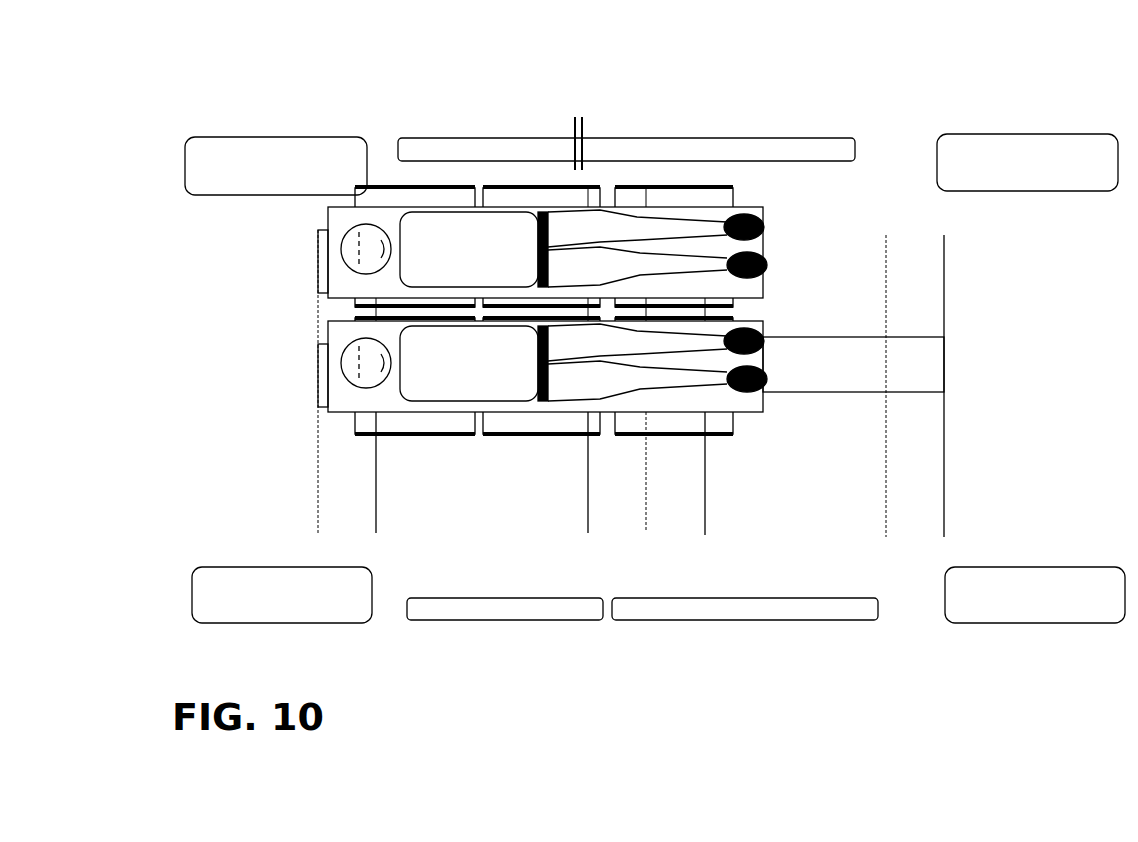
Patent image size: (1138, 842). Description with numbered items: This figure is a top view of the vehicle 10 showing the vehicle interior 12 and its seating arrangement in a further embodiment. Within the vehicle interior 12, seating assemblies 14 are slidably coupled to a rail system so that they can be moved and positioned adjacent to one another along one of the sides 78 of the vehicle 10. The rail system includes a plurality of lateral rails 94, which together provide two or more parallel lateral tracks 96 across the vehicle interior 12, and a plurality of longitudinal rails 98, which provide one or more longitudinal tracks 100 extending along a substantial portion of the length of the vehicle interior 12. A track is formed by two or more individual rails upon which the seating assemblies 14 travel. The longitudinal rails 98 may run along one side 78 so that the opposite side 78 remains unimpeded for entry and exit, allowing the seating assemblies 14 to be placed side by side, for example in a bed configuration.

The vehicle 10 is at (230, 104).
The vehicle interior 12 is at (838, 213).
The seating assembly 14 is at (522, 184).
The side 78 is at (843, 175).
The lateral rail 94 is at (376, 500).
The lateral track 96 is at (342, 468).
The longitudinal rail 98 is at (318, 232).
The longitudinal track 100 is at (840, 351).